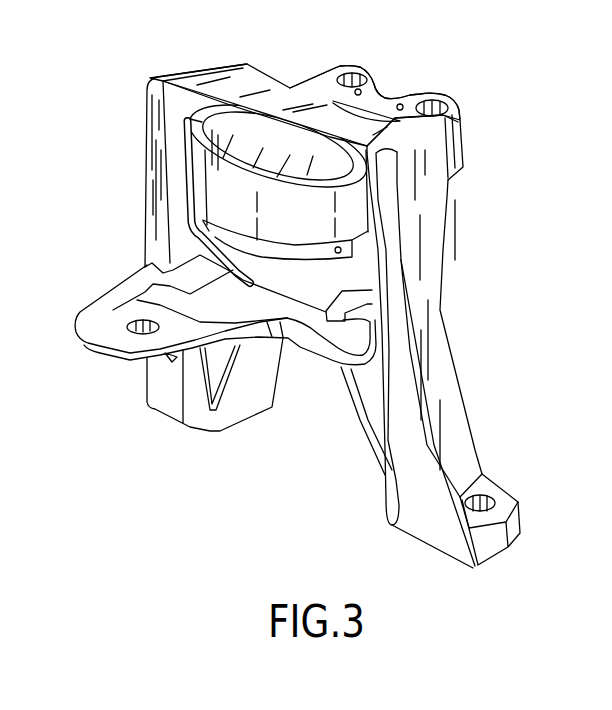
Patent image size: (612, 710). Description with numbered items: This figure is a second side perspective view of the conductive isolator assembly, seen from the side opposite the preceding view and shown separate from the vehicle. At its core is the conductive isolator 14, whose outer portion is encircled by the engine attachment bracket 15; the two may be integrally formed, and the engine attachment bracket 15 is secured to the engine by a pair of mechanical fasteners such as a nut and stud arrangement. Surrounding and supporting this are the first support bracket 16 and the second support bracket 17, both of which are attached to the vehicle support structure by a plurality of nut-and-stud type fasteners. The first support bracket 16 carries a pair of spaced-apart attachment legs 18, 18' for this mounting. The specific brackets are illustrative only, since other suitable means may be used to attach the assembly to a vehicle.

The conductive isolator 14 is at (243, 157).
The engine attachment bracket 15 is at (373, 80).
The first support bracket 16 is at (264, 96).
The second support bracket 17 is at (92, 327).
The attachment leg 18 is at (203, 395).
The attachment leg 18' is at (504, 511).